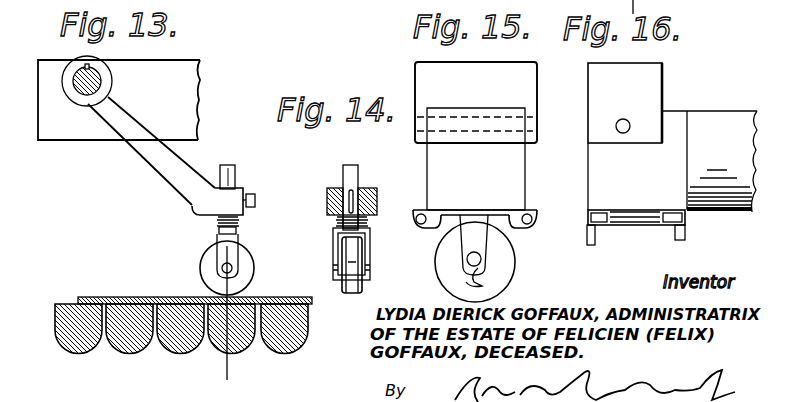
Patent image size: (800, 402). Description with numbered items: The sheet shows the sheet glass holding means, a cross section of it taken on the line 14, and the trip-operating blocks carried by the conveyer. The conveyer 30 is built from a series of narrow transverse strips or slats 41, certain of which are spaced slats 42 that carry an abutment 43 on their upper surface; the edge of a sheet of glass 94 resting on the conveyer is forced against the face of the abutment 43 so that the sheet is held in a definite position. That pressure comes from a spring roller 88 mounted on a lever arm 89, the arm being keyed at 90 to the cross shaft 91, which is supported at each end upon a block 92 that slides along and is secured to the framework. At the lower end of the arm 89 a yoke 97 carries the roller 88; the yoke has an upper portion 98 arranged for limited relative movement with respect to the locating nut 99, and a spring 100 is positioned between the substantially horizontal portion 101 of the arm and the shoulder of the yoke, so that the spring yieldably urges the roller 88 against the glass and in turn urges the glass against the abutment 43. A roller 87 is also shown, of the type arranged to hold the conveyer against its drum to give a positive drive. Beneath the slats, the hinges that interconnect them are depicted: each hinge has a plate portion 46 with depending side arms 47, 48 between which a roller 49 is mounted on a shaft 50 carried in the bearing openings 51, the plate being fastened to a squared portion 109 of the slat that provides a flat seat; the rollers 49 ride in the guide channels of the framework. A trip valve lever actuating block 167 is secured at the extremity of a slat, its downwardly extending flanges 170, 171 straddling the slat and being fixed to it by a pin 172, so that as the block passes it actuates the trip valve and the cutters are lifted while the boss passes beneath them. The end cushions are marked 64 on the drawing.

In FIG. 13, the section line 14 is at (238, 150).
In FIG. 13, the conveyer 30 is at (310, 331).
In FIG. 15, the conveyer 30 is at (522, 168).
In FIG. 16, the conveyer 30 is at (718, 112).
In FIG. 13, the slats 41 is at (214, 340).
In FIG. 15, the slats 41 is at (512, 112).
In FIG. 16, the slats 41 is at (754, 104).
In FIG. 13, the spaced slats 42 is at (62, 328).
In FIG. 13, the abutment 43 is at (88, 297).
In FIG. 15, the plate portion 46 is at (446, 210).
In FIG. 16, the plate portion 46 is at (624, 196).
In FIG. 16, the depending side arm 47 is at (587, 233).
In FIG. 15, the depending side arm 48 is at (468, 236).
In FIG. 16, the depending side arm 48 is at (686, 236).
In FIG. 15, the roller 49 is at (505, 258).
In FIG. 15, the shaft 50 is at (467, 263).
In FIG. 15, the bearing openings 51 is at (472, 274).
In FIG. 13, the end cushion 64 is at (78, 348).
In FIG. 16, the end cushion 64 is at (733, 213).
In FIG. 13, the roller 87 is at (154, 186).
In FIG. 13, the spring roller 88 is at (246, 260).
In FIG. 14, the spring roller 88 is at (362, 287).
In FIG. 13, the lever arm 89 is at (142, 132).
In FIG. 14, the lever arm 89 is at (327, 194).
In FIG. 13, the key 90 is at (88, 68).
In FIG. 13, the cross shaft 91 is at (101, 80).
In FIG. 13, the block 92 is at (198, 52).
In FIG. 13, the sheet of glass 94 is at (136, 297).
In FIG. 13, the yoke 97 is at (217, 240).
In FIG. 14, the yoke 97 is at (333, 252).
In FIG. 13, the upper portion 98 is at (236, 176).
In FIG. 14, the upper portion 98 is at (358, 172).
In FIG. 13, the locating nut 99 is at (256, 199).
In FIG. 13, the spring 100 is at (237, 231).
In FIG. 14, the spring 100 is at (343, 224).
In FIG. 13, the horizontally extending portion 101 is at (240, 219).
In FIG. 14, the horizontally extending portion 101 is at (334, 210).
In FIG. 15, the squared portion 109 is at (517, 186).
In FIG. 16, the squared portion 109 is at (690, 163).
In FIG. 15, the trip valve lever actuating block 167 is at (427, 66).
In FIG. 16, the trip valve lever actuating block 167 is at (650, 73).
In FIG. 15, the downwardly extending flange 170 is at (415, 142).
In FIG. 16, the downwardly extending flange 170 is at (640, 143).
In FIG. 15, the downwardly extending flange 171 is at (537, 140).
In FIG. 15, the pin 172 is at (480, 92).
In FIG. 16, the pin 172 is at (640, 102).